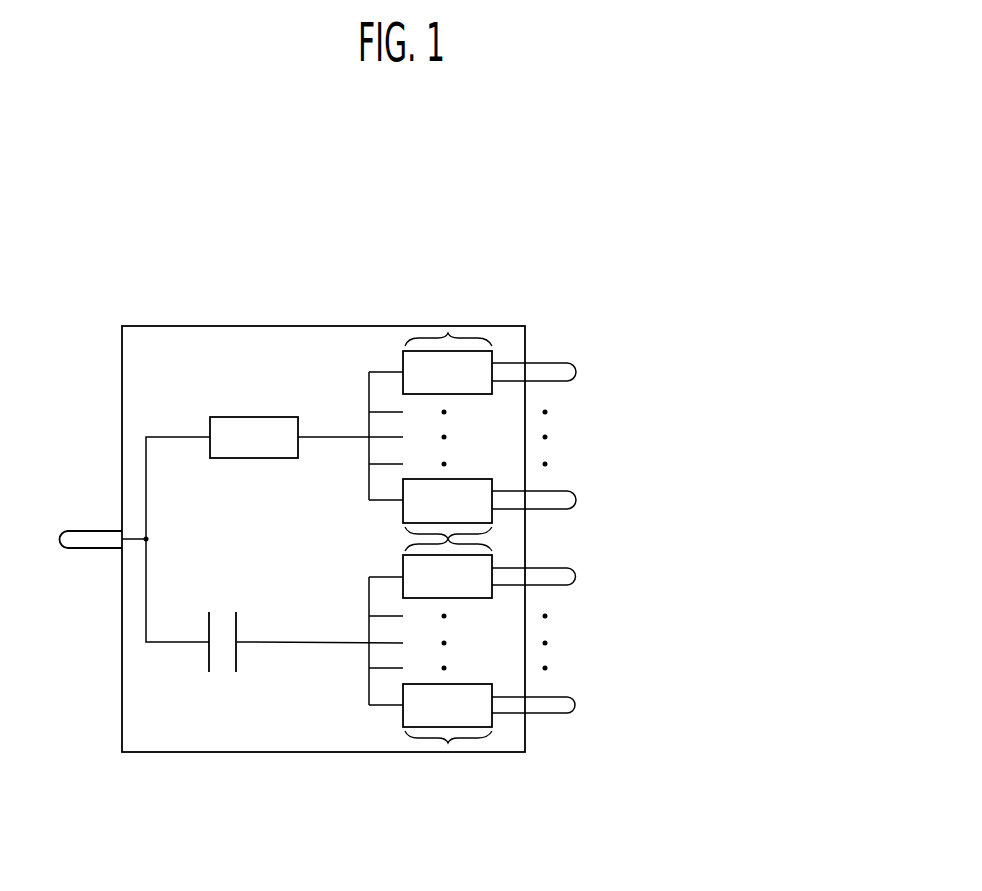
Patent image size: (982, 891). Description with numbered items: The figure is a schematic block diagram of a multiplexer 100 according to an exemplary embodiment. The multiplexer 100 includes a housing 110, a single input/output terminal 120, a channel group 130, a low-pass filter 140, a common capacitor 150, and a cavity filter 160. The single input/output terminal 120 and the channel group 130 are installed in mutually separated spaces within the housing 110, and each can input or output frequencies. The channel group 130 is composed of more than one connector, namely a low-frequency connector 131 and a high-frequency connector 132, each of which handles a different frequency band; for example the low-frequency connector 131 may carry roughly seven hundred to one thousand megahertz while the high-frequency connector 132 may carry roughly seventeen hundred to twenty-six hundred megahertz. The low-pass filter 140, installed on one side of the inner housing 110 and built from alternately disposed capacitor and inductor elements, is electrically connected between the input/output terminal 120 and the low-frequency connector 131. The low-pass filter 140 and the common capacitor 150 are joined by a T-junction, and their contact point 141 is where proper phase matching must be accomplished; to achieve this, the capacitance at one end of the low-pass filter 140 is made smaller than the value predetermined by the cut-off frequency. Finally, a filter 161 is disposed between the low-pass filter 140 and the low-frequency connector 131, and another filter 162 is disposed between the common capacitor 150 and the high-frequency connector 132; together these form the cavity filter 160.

The multiplexer 100 is at (80, 294).
The housing 110 is at (175, 325).
The single input/output terminal 120 is at (82, 530).
The channel group 130 is at (569, 539).
The low-frequency connector 131 is at (595, 372).
The high-frequency connector 132 is at (520, 641).
The low-pass filter 140 is at (252, 417).
The contact point 141 is at (143, 541).
The common capacitor 150 is at (237, 652).
The cavity filter 160 is at (644, 538).
The filter 161 is at (448, 333).
The filter 162 is at (448, 743).